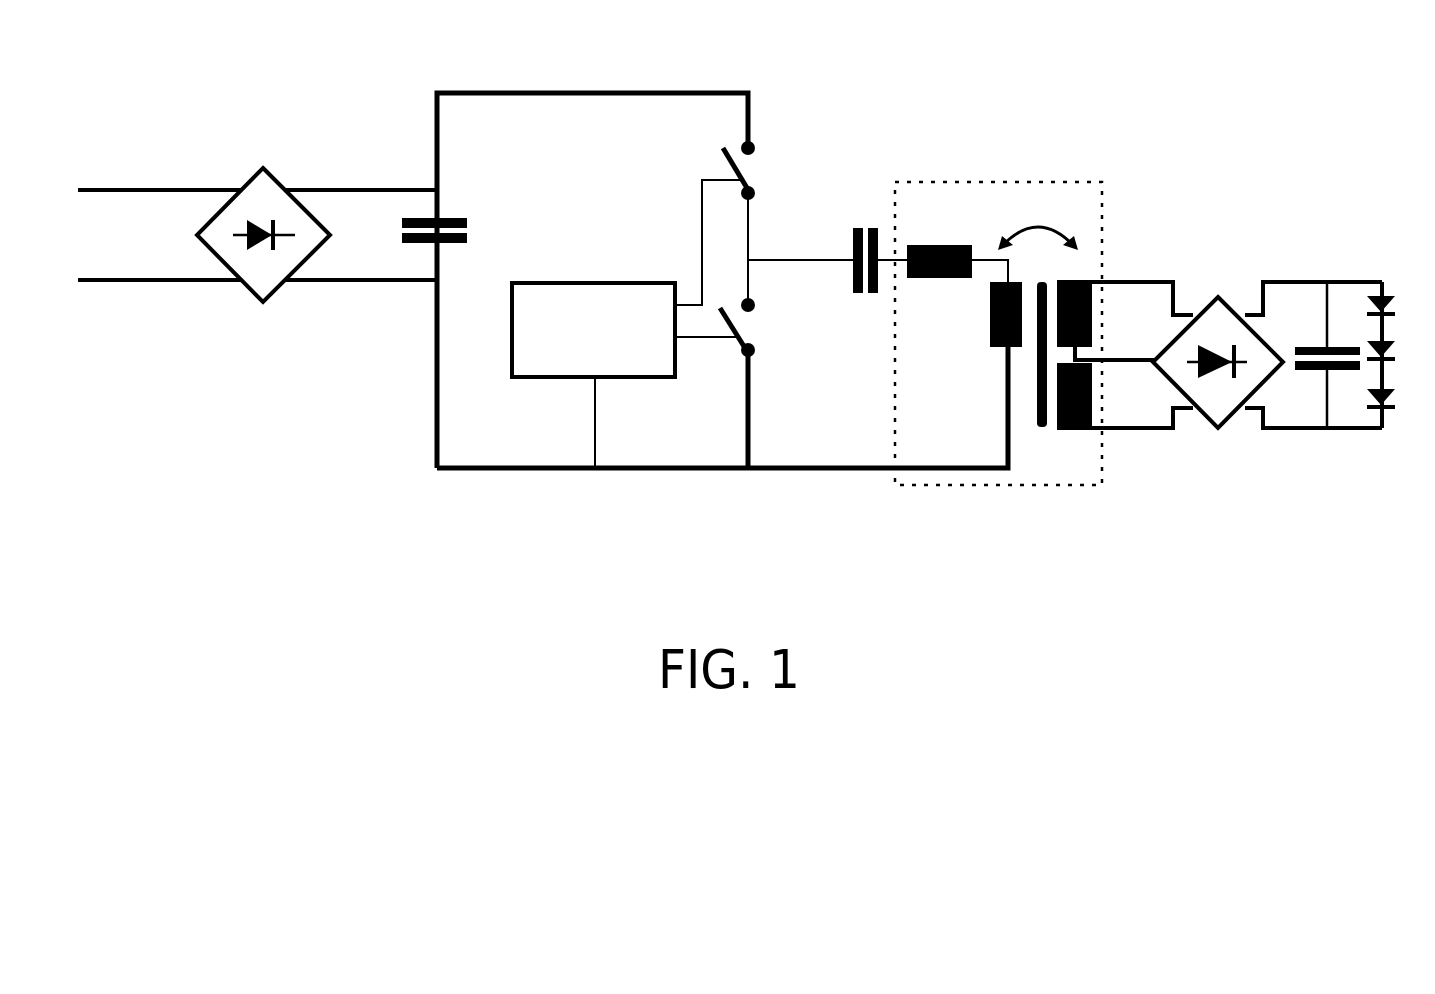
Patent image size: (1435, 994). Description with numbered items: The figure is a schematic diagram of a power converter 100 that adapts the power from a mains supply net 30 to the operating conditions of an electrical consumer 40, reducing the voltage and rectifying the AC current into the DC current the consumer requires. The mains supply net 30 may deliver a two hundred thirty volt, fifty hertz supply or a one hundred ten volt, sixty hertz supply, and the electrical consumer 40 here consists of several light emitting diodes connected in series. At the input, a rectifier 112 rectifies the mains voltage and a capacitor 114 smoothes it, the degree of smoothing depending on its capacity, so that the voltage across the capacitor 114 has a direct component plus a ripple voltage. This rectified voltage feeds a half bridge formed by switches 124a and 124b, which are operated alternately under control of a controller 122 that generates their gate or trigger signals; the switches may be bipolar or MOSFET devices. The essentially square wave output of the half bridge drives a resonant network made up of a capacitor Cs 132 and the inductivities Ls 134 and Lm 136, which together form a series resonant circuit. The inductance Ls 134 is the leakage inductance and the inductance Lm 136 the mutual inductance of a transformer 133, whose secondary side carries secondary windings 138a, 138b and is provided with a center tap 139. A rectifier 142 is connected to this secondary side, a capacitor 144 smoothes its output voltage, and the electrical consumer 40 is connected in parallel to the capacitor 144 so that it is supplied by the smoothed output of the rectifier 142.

The power converter 100 is at (508, 592).
The mains supply net 30 is at (80, 235).
The rectifier 112 is at (247, 183).
The capacitor 114 is at (422, 218).
The controller 122 is at (575, 282).
The switch 124a is at (750, 168).
The switch 124b is at (753, 330).
The capacitor Cs 132 is at (867, 226).
The transformer 133 is at (980, 487).
The inductance Ls 134 is at (908, 243).
The inductance Lm 136 is at (987, 278).
The secondary winding 138a is at (1092, 318).
The secondary winding 138b is at (1092, 398).
The center tap 139 is at (1138, 363).
The rectifier 142 is at (1232, 304).
The capacitor 144 is at (1303, 345).
The electrical consumer 40 is at (1393, 300).